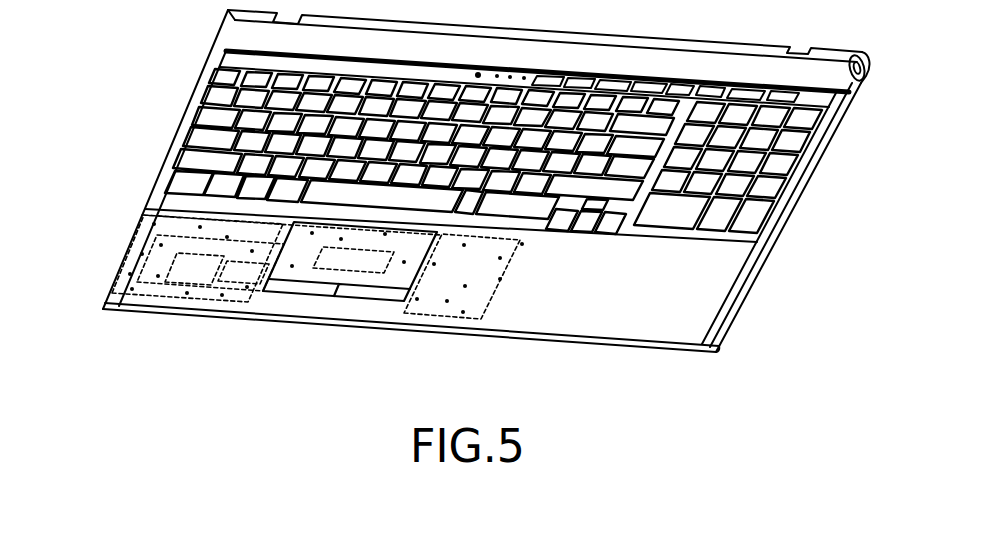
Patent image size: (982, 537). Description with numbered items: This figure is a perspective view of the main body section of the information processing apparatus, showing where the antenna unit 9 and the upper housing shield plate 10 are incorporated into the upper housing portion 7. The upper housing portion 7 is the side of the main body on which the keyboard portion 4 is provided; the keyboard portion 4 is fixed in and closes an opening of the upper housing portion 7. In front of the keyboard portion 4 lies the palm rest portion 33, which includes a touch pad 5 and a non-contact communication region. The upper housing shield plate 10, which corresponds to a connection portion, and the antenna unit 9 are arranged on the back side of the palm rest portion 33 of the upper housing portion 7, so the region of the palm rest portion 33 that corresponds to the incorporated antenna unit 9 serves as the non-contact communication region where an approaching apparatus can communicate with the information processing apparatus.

The keyboard portion 4 is at (772, 165).
The touch pad 5 is at (333, 268).
The upper housing portion 7 is at (713, 288).
The antenna unit 9 is at (156, 276).
The upper housing shield plate 10 is at (140, 220).
The palm rest portion 33 is at (597, 295).